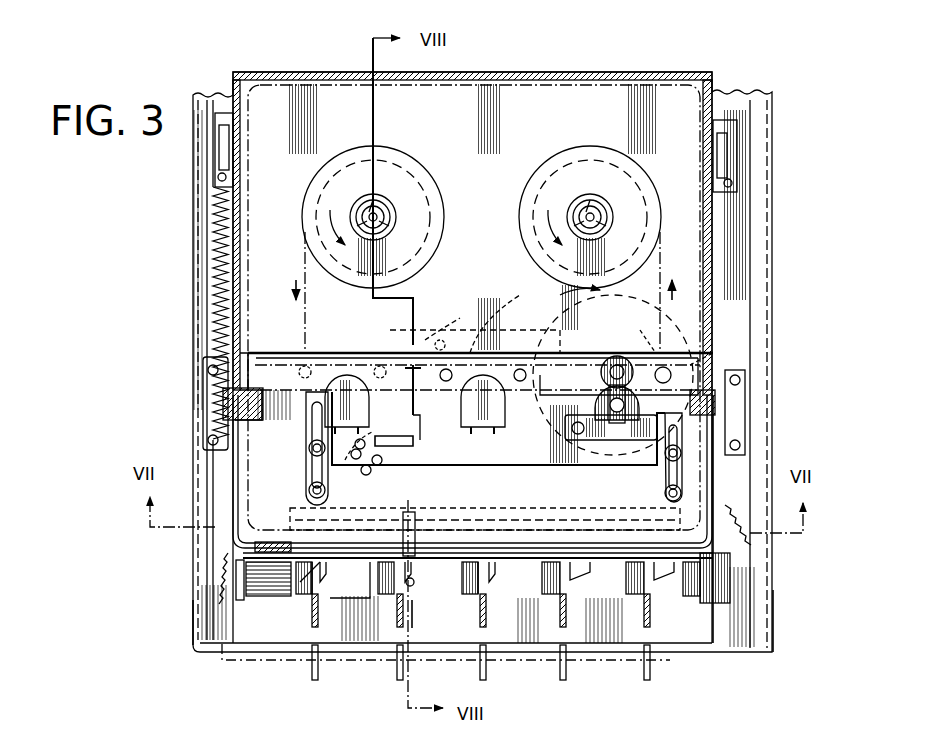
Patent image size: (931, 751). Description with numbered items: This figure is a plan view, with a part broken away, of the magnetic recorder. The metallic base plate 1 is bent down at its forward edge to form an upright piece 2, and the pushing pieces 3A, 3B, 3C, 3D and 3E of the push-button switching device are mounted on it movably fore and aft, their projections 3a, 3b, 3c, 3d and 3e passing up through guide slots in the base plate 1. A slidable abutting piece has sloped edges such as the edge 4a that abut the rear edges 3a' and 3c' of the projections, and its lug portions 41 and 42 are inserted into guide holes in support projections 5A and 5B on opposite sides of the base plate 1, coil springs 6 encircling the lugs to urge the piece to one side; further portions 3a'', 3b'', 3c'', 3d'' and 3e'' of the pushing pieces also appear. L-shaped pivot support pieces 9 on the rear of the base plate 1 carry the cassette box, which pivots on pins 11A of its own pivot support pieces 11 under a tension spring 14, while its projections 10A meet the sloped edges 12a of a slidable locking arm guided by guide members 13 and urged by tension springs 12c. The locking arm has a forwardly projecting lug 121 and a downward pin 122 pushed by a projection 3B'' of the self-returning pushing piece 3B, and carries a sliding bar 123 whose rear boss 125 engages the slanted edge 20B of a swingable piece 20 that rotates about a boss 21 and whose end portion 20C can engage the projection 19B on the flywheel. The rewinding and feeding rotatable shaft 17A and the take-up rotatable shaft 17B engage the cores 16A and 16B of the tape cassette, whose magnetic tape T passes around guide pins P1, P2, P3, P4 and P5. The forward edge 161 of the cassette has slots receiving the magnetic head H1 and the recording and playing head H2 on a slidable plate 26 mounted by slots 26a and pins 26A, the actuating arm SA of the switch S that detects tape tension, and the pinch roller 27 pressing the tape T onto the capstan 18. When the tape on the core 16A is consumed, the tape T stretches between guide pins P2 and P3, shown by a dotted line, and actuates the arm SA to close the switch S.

The base plate 1 is at (772, 300).
The upright piece 2 is at (508, 654).
The pivot support piece 9 is at (212, 165).
The pivot support piece 11 is at (230, 148).
The pin 11A is at (233, 115).
The sloped front upper edge 12a is at (243, 352).
The tension spring 12c is at (212, 570).
The guide member 13 is at (240, 402).
The tension spring 14 is at (187, 370).
The projection 10A is at (208, 385).
The forward edge 161 is at (265, 402).
The core 16A is at (441, 160).
The core 16B is at (543, 192).
The rewinding and feeding rotatable shaft 17A is at (368, 210).
The take-up rotatable shaft 17B is at (580, 205).
The capstan 18 is at (706, 352).
The projection 19B is at (655, 351).
The swingable piece 20 is at (480, 352).
The slanted edge 20B is at (450, 330).
The end portion 20C is at (613, 371).
The boss 21 is at (495, 321).
The boss 125 is at (427, 352).
The sliding bar 123 is at (418, 465).
The slidable plate 26 is at (536, 468).
The pin 26A is at (310, 450).
The slot 26a is at (647, 457).
The pinch roller 27 is at (660, 432).
The magnetic tape T is at (620, 115).
The guide pin P1 is at (308, 352).
The guide pin P2 is at (381, 352).
The guide pin P3 is at (443, 382).
The guide pin P4 is at (522, 382).
The guide pin P5 is at (630, 372).
The magnetic head H1 is at (347, 376).
The magnetic head H2 is at (488, 430).
The actuating arm SA is at (379, 431).
The switch S is at (394, 450).
The lug portion 41 is at (176, 621).
The lug portion 42 is at (787, 621).
The support projection 5A is at (240, 600).
The support projection 5B is at (718, 608).
The coil spring 6 is at (275, 598).
The sloped edge 4a is at (325, 578).
The projection 3a is at (300, 649).
The rear edge 3a' is at (327, 590).
The pin support edge 3a'' is at (281, 625).
The pushing piece 3A is at (326, 678).
The projection 3b is at (384, 649).
The pin support 3b'' is at (377, 625).
The pushing piece 3B is at (389, 686).
The projection 3B'' is at (433, 618).
The forwardly projecting lug 121 is at (412, 568).
The pin 122 is at (414, 586).
The projection 3c is at (498, 614).
The rear edge 3c' is at (491, 578).
The pin support edge 3c'' is at (502, 585).
The pushing piece 3C is at (496, 672).
The projection 3d is at (581, 642).
The pin support 3d'' is at (578, 596).
The pushing piece 3D is at (574, 680).
The projection 3e is at (667, 643).
The pin support 3e'' is at (663, 593).
The pushing piece 3E is at (655, 680).